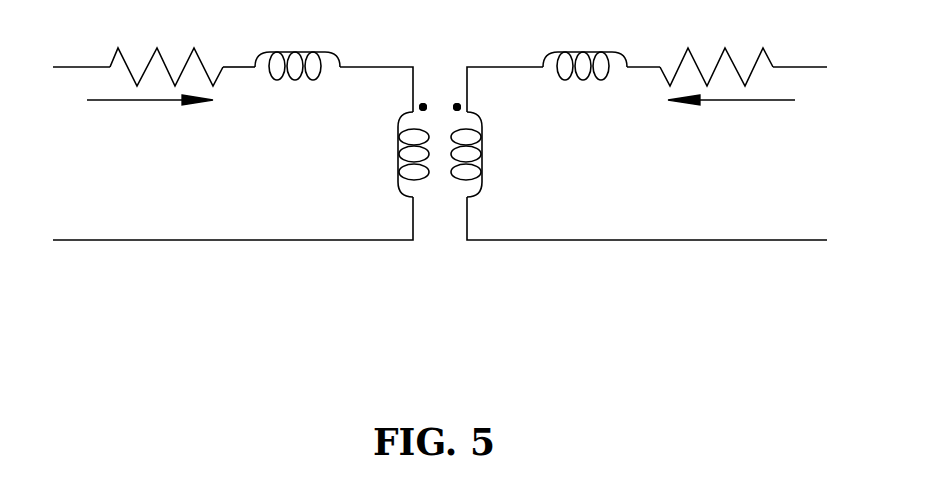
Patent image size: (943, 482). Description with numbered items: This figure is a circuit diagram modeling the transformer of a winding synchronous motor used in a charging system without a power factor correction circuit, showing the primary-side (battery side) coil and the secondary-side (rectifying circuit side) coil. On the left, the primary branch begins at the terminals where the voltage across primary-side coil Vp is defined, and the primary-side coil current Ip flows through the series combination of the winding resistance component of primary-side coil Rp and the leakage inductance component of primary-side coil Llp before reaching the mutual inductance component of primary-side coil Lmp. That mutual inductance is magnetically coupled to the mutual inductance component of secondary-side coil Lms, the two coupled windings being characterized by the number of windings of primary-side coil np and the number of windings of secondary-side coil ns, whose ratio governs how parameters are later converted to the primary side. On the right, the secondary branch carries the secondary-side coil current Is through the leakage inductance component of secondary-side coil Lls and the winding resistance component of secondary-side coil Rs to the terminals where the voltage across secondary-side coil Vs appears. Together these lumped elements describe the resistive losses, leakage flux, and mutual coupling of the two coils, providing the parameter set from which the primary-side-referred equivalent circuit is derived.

The winding resistance component of primary-side coil Rp is at (166, 49).
The leakage inductance component of primary-side coil Llp is at (297, 46).
The number of windings of primary-side coil np is at (412, 62).
The number of windings of secondary-side coil ns is at (465, 62).
The mutual inductance component of primary-side coil Lmp is at (385, 154).
The mutual inductance component of secondary-side coil Lms is at (495, 154).
The leakage inductance component of secondary-side coil Lls is at (585, 46).
The winding resistance component of secondary-side coil Rs is at (716, 49).
The primary-side coil current Ip is at (150, 118).
The secondary-side coil current Is is at (731, 118).
The voltage across primary-side coil Vp is at (58, 187).
The voltage across secondary-side coil Vs is at (826, 187).